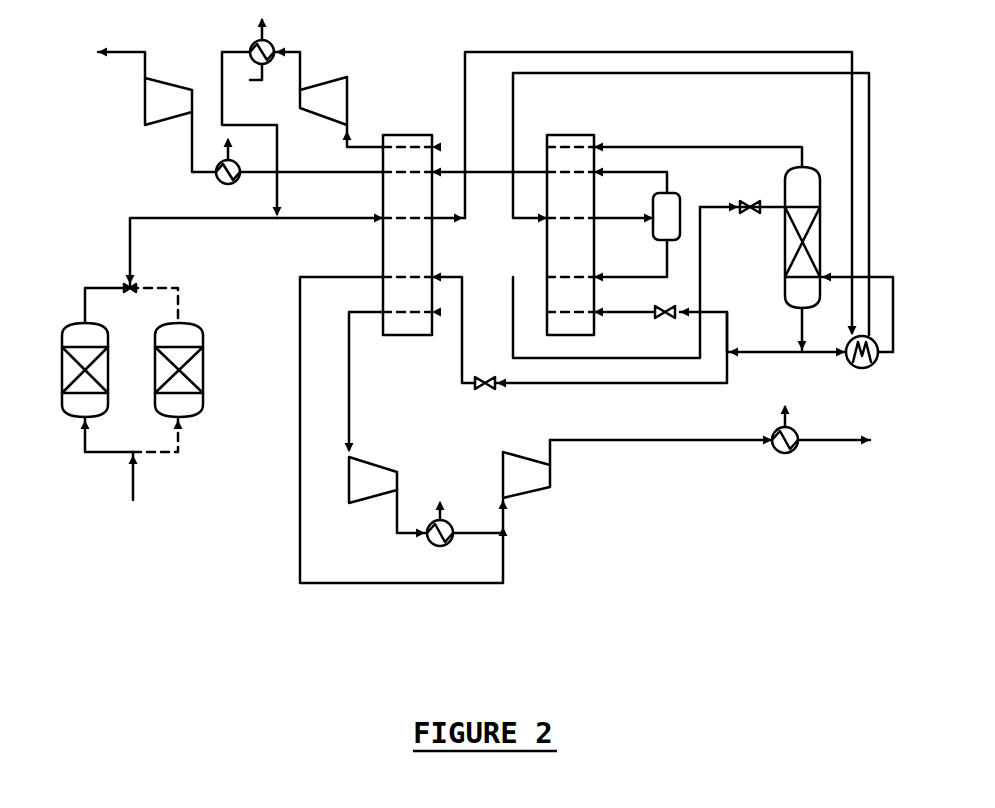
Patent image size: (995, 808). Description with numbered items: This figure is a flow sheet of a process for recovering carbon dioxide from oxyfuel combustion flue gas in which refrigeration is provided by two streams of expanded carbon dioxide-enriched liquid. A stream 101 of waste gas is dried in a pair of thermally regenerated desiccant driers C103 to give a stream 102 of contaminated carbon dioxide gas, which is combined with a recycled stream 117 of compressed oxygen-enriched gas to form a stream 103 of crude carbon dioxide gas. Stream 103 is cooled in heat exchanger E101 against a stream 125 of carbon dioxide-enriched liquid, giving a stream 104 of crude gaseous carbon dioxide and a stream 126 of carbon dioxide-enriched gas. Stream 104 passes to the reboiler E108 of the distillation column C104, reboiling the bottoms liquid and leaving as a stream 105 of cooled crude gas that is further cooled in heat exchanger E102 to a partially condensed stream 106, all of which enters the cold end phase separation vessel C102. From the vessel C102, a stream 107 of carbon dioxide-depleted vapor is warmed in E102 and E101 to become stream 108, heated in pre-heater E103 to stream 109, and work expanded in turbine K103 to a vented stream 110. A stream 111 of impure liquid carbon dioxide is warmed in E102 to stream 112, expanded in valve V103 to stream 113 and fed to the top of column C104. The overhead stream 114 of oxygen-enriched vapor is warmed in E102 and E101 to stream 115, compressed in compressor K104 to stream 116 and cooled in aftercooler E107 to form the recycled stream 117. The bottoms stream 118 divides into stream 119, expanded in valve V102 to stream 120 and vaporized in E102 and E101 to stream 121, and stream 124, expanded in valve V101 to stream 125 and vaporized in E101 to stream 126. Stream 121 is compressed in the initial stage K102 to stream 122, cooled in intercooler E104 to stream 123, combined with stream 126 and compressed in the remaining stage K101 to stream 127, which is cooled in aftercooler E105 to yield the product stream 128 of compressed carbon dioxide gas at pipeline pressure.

The stream of waste gas 101 is at (133, 488).
The stream of contaminated carbon dioxide gas 102 is at (238, 222).
The stream of crude carbon dioxide gas 103 is at (358, 222).
The stream of crude gaseous carbon dioxide 104 is at (641, 52).
The stream of cooled crude carbon dioxide gas 105 is at (679, 75).
The stream of partially condensed crude carbon dioxide gas 106 is at (638, 218).
The stream of carbon dioxide-depleted vapor 107 is at (667, 172).
The stream of carbon dioxide-depleted gas 108 is at (331, 172).
The stream of heated carbon dioxide-depleted gas 109 is at (192, 157).
The stream of expanded carbon dioxide-depleted gas 110 is at (129, 52).
The stream of impure carbon dioxide liquid 111 is at (645, 273).
The stream of warmed impure carbon dioxide liquid 112 is at (705, 284).
The stream of expanded impure carbon dioxide liquid 113 is at (766, 200).
The stream of oxygen-enriched overhead vapor 114 is at (774, 147).
The stream of warmed oxygen-enriched gas 115 is at (356, 147).
The stream of compressed oxygen-enriched gas 116 is at (302, 62).
The stream of compressed oxygen-enriched gas 117 is at (222, 66).
The stream of carbon dioxide-enriched bottoms liquid 118 is at (769, 353).
The stream of carbon dioxide-enriched bottoms liquid portion 119 is at (727, 331).
The stream of expanded carbon dioxide-enriched liquid 120 is at (627, 315).
The stream of carbon dioxide-enriched gas 121 is at (356, 403).
The stream of compressed carbon dioxide gas 122 is at (397, 524).
The stream of cooled compressed carbon dioxide gas 123 is at (469, 530).
The stream of carbon dioxide-enriched bottoms liquid portion 124 is at (601, 386).
The stream of expanded carbon dioxide-enriched liquid 125 is at (462, 358).
The stream of carbon dioxide-enriched gas 126 is at (300, 483).
The stream of further compressed carbon dioxide gas 127 is at (681, 440).
The stream of compressed carbon dioxide gas 128 is at (808, 447).
The cold end phase separation vessel C102 is at (681, 218).
The thermally regenerated desiccant driers C103 is at (205, 386).
The distillation column C104 is at (785, 244).
The heat exchanger E101 is at (434, 135).
The heat exchanger E102 is at (541, 135).
The pre-heater E103 is at (221, 184).
The intercooler E104 is at (436, 548).
The aftercooler E105 is at (775, 452).
The aftercooler E107 is at (268, 46).
The reboiler heat exchanger E108 is at (856, 368).
The remaining compressor stage K101 is at (491, 456).
The initial compressor stage K102 is at (397, 443).
The turbine K103 is at (167, 80).
The compressor K104 is at (321, 80).
The valve V101 is at (490, 389).
The valve V102 is at (663, 325).
The valve V103 is at (752, 211).